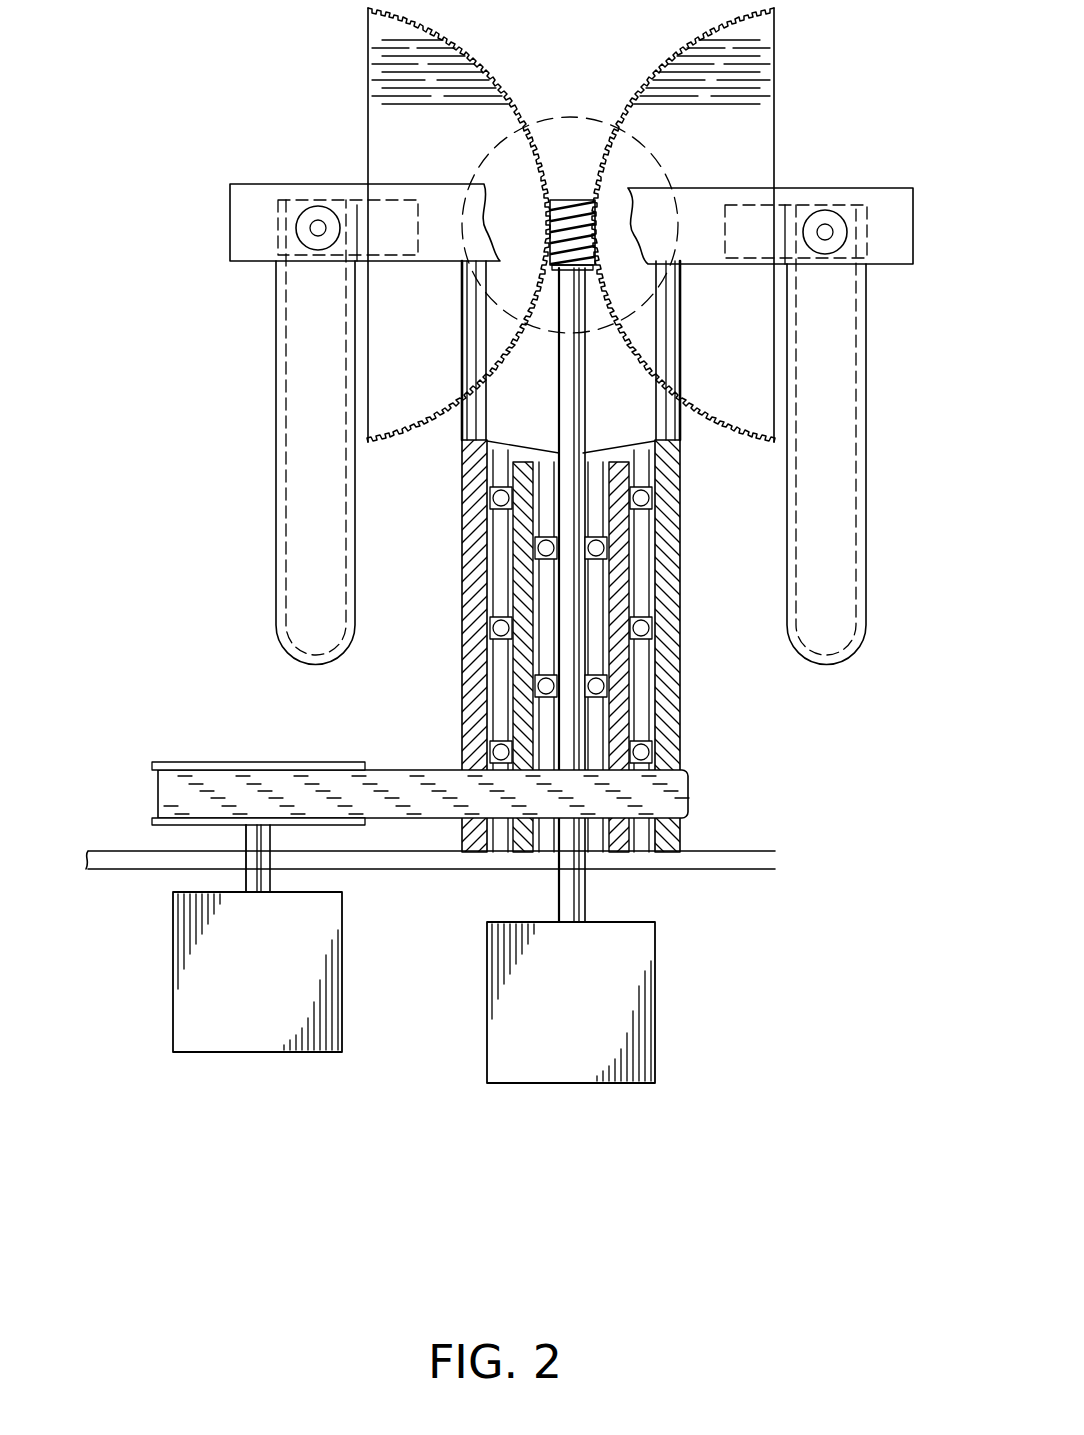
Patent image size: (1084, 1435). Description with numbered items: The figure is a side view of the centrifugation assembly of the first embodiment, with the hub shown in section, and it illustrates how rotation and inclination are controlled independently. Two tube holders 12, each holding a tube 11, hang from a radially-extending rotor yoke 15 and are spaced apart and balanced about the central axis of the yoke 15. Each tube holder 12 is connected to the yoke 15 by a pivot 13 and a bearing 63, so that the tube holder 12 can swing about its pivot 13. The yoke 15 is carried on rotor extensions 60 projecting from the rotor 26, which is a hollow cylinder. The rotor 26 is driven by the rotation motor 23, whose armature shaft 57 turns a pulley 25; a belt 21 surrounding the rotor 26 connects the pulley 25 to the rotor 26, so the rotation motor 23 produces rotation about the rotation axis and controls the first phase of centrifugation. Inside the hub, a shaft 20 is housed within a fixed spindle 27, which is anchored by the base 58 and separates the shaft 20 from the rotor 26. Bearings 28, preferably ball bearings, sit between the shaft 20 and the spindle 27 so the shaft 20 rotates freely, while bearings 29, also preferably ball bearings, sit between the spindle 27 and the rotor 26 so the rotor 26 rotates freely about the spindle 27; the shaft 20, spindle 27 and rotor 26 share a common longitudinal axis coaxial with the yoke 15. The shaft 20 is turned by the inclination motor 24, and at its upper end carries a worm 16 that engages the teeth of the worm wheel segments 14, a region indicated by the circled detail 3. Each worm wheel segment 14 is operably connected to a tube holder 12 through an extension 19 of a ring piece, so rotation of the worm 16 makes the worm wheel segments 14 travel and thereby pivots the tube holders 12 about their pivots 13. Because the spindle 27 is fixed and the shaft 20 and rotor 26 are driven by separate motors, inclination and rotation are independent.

The gear mesh detail region 3 is at (554, 115).
The tube 11 is at (284, 480).
The tube holder 12 is at (276, 530).
The pivot 13 is at (318, 221).
The worm wheel segment 14 is at (487, 74).
The rotor yoke 15 is at (437, 200).
The worm 16 is at (568, 200).
The extension 19 is at (755, 205).
The shaft 20 is at (577, 409).
The belt 21 is at (158, 790).
The rotation motor 23 is at (258, 1055).
The inclination motor 24 is at (572, 1088).
The pulley 25 is at (180, 762).
The rotor 26 is at (668, 470).
The spindle 27 is at (522, 592).
The bearing 28 is at (532, 512).
The bearing 29 is at (482, 722).
The armature shaft 57 is at (250, 838).
The base 58 is at (738, 851).
The rotor extension 60 is at (462, 333).
The bearing 63 is at (300, 222).